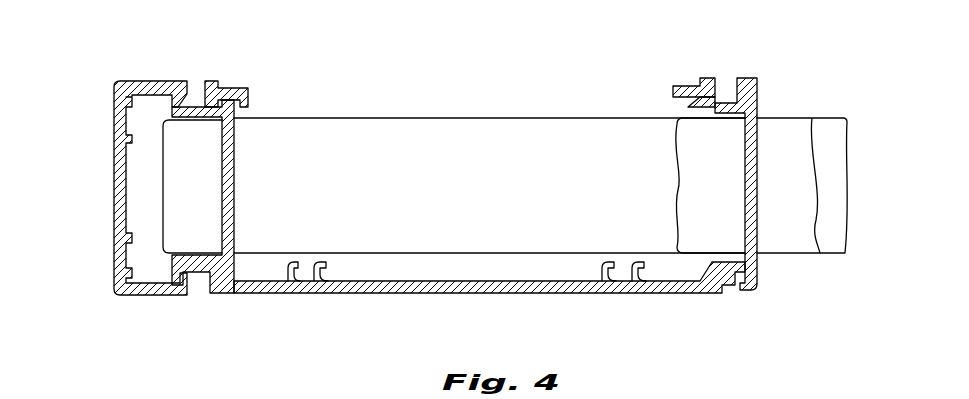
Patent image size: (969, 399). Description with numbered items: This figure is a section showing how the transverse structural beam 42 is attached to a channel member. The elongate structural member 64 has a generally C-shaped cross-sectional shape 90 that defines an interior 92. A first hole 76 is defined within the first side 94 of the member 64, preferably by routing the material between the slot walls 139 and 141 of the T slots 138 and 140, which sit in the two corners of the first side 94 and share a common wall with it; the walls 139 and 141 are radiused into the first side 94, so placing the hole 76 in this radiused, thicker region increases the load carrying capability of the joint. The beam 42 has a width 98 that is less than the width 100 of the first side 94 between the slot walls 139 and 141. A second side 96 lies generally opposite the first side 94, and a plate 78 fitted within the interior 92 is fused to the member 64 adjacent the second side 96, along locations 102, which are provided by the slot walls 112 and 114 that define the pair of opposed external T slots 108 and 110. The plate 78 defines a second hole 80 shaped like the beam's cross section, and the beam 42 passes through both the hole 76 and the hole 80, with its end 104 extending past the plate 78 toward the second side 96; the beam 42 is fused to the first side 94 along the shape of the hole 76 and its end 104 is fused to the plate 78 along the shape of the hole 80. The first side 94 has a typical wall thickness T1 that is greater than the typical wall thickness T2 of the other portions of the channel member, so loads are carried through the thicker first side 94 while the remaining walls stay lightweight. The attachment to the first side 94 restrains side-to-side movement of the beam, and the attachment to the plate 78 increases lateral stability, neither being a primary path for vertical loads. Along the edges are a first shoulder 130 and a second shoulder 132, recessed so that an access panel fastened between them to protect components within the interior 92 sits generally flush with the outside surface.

The structural beam 42 is at (458, 188).
The elongate structural member 64 is at (554, 286).
The first hole 76 is at (730, 96).
The plate 78 is at (240, 253).
The second hole 80 is at (236, 143).
The C-shaped cross-sectional shape 90 is at (149, 80).
The interior 92 is at (439, 270).
The first side 94 is at (758, 157).
The second side 96 is at (113, 265).
The width 98 is at (847, 184).
The width 100 is at (679, 183).
The locations 102 is at (238, 100).
The end 104 is at (162, 224).
The T slot 108 is at (197, 276).
The T slot 110 is at (195, 97).
The slot wall 112 is at (216, 270).
The slot wall 114 is at (209, 83).
The first shoulder 130 is at (243, 90).
The second shoulder 132 is at (684, 84).
The T slot 138 is at (716, 86).
The slot wall 139 is at (712, 107).
The T slot 140 is at (733, 278).
The slot wall 141 is at (737, 258).
The wall thickness T1 is at (713, 202).
The wall thickness T2 is at (157, 150).